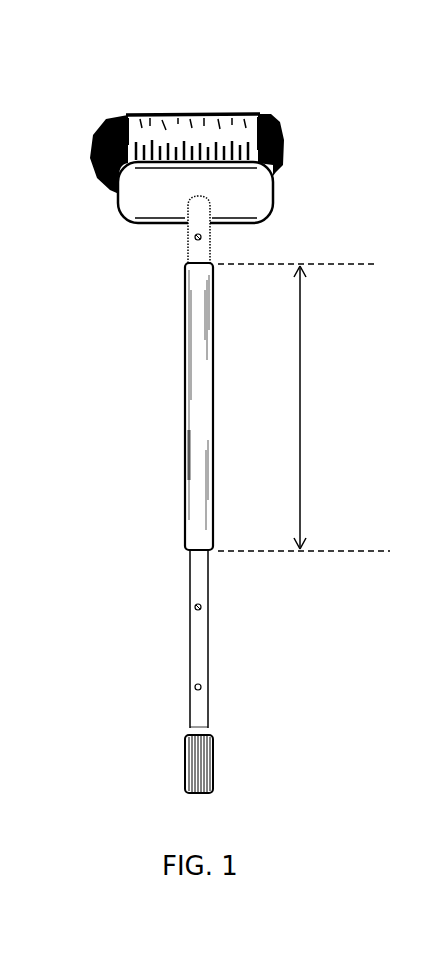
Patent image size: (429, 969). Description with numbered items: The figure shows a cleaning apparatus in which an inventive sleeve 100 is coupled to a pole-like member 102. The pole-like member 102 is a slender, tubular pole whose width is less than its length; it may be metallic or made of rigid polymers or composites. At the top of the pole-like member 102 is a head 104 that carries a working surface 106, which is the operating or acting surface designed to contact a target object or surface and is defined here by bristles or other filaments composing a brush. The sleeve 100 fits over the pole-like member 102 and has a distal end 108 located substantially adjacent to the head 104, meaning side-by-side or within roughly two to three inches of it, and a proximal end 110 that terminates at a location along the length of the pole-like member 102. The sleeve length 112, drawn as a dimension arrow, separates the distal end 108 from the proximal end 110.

The sleeve 100 is at (229, 428).
The pole-like member 102 is at (203, 644).
The head 104 is at (259, 196).
The working surface 106 is at (268, 110).
The distal end 108 is at (178, 272).
The proximal end 110 is at (187, 556).
The sleeve length 112 is at (300, 373).